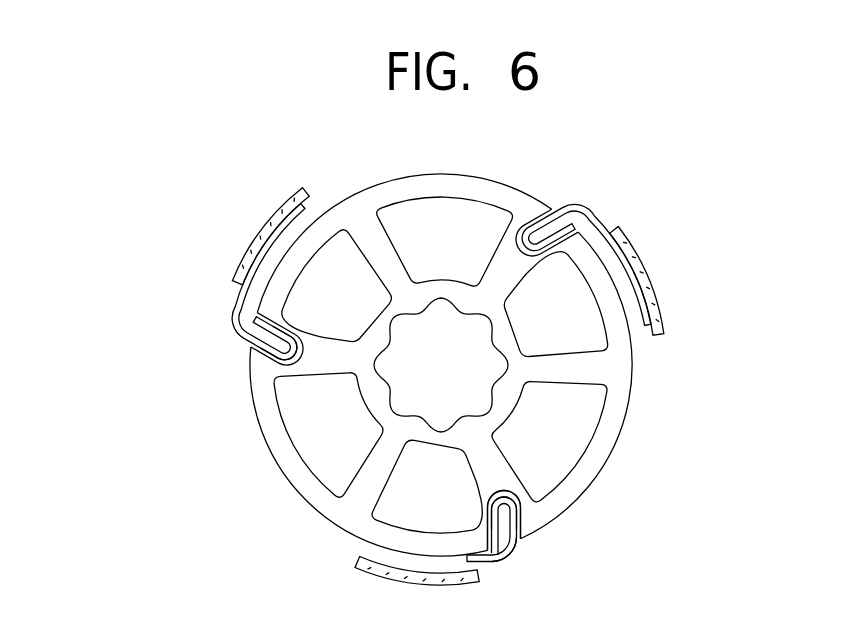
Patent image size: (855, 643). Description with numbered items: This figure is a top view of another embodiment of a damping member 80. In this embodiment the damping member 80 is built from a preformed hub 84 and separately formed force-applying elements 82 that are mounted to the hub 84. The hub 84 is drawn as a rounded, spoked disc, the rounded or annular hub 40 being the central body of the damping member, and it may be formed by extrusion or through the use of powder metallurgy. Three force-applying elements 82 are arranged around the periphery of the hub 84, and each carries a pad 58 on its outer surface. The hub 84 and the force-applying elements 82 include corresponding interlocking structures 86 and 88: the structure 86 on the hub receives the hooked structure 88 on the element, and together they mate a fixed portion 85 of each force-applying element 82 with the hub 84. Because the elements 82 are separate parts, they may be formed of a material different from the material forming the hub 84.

The damping member 80 is at (192, 224).
The hub 84 is at (505, 193).
The force-applying elements 82 is at (238, 302).
The friction pad 58 is at (275, 223).
The hub 40 is at (293, 336).
The interlocking structure 86 is at (521, 493).
The interlocking structure 88 is at (522, 506).
The fixed portion 85 is at (520, 541).